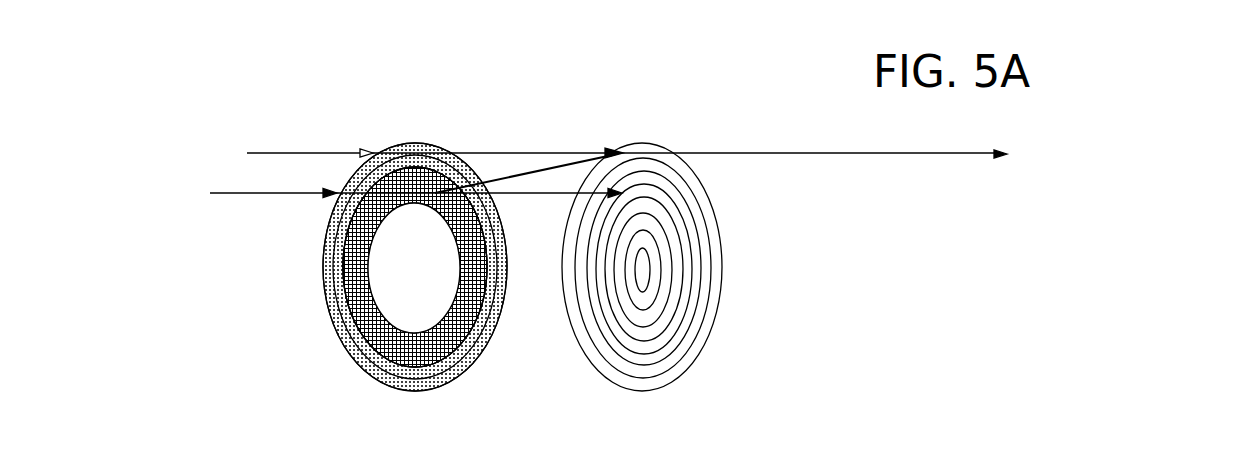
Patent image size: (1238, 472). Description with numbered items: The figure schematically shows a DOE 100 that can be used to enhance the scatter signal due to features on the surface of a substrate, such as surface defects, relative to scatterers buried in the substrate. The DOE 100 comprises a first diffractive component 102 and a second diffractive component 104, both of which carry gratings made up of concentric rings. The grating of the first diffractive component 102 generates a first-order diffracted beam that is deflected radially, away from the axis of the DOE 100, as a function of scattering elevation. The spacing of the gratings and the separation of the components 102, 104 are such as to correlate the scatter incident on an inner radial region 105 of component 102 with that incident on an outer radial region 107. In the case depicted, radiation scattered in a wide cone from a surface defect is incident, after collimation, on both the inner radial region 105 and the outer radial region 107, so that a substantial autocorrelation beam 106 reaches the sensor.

The DOE 100 is at (340, 88).
The first diffractive component 102 is at (407, 239).
The second diffractive component 104 is at (682, 235).
The inner radial region 105 is at (368, 280).
The autocorrelation beam 106 is at (853, 157).
The outer radial region 107 is at (323, 308).